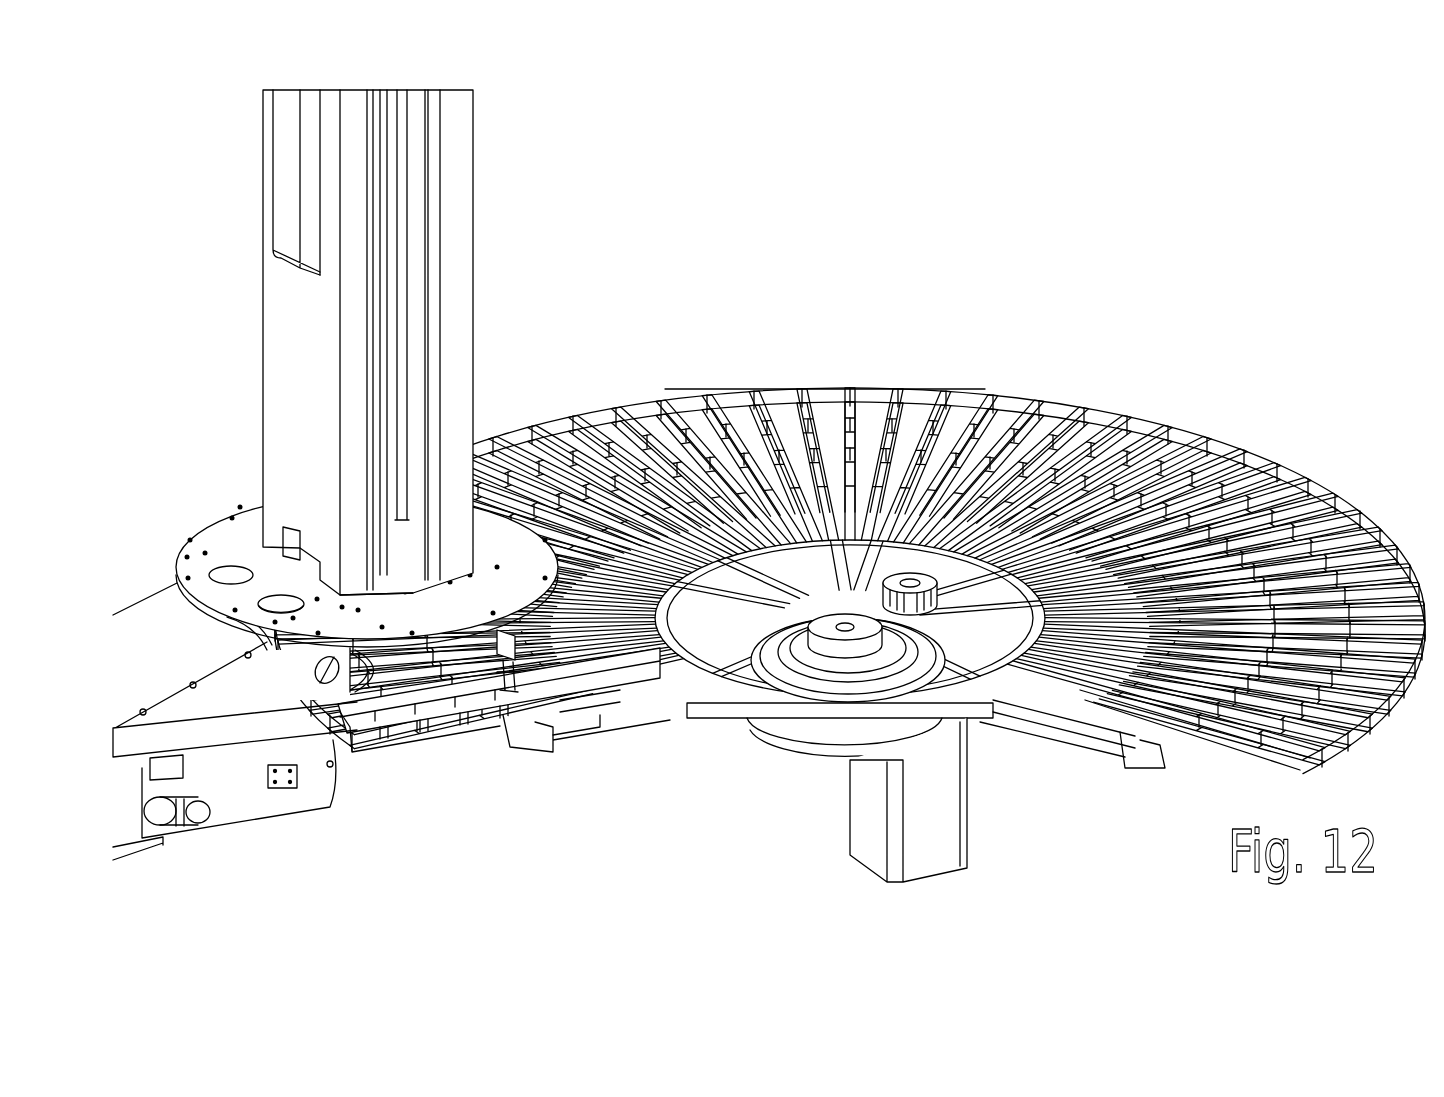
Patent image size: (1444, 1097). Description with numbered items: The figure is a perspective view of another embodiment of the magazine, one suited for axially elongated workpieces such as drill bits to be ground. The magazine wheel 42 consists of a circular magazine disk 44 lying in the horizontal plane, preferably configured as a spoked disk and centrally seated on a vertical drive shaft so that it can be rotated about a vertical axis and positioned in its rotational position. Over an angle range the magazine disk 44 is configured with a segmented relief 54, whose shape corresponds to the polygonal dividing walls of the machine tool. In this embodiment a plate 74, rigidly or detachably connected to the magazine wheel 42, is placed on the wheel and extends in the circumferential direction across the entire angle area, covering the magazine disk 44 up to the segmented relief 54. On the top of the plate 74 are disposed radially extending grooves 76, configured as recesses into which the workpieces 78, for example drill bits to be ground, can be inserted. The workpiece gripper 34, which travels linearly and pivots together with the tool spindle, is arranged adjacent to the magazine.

The workpiece gripper 34 is at (510, 713).
The magazine wheel 42 is at (583, 737).
The magazine disk 44 is at (933, 697).
The segmented relief 54 is at (1082, 743).
The plate 74 is at (393, 757).
The radially extending grooves 76 is at (470, 707).
The workpieces 78 is at (687, 707).